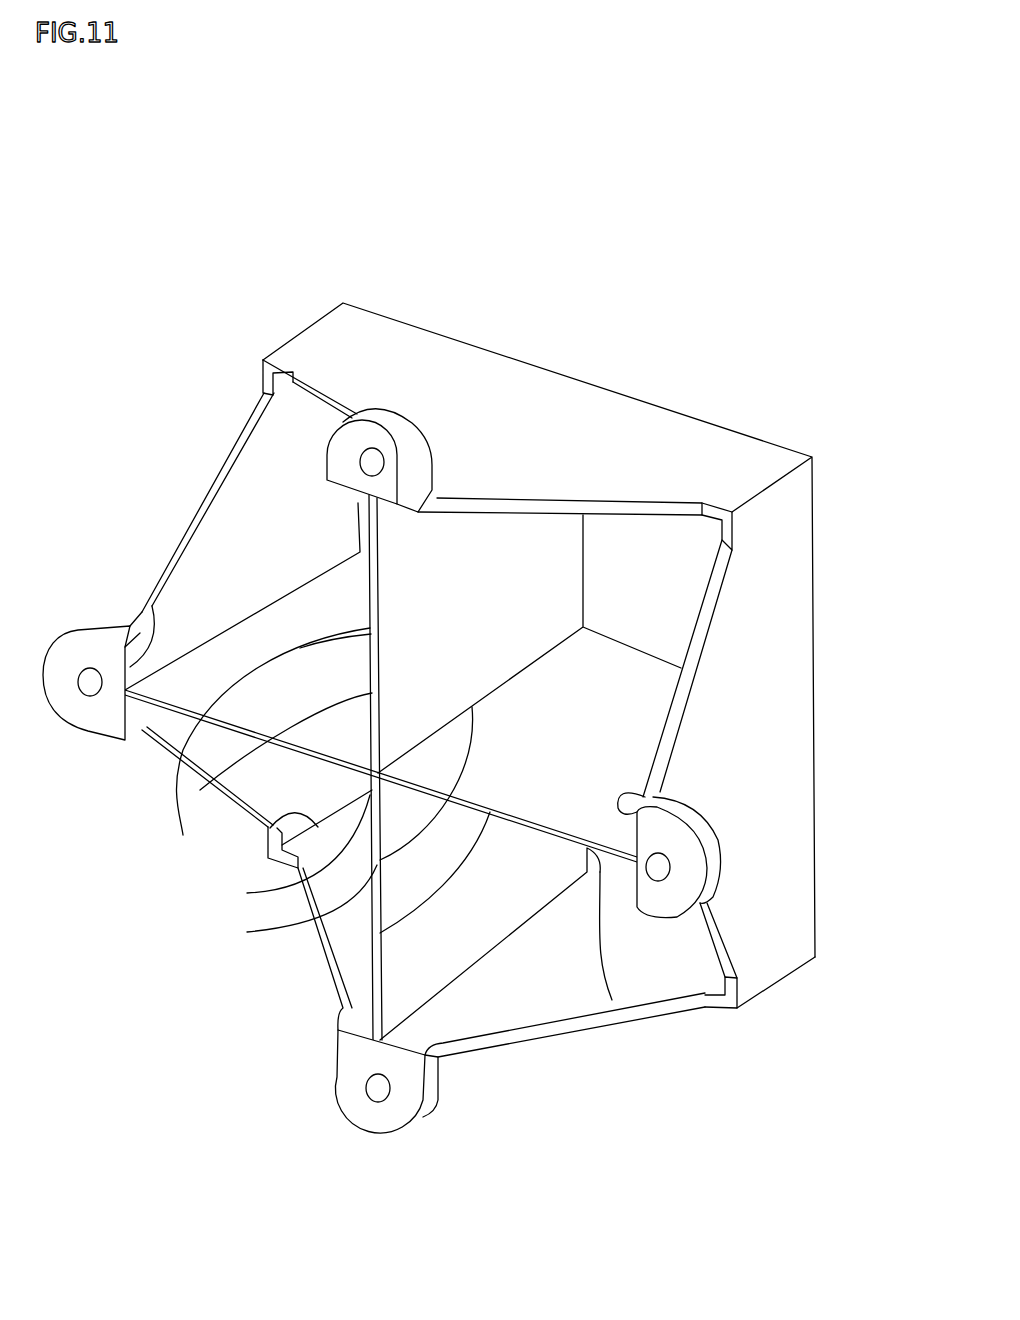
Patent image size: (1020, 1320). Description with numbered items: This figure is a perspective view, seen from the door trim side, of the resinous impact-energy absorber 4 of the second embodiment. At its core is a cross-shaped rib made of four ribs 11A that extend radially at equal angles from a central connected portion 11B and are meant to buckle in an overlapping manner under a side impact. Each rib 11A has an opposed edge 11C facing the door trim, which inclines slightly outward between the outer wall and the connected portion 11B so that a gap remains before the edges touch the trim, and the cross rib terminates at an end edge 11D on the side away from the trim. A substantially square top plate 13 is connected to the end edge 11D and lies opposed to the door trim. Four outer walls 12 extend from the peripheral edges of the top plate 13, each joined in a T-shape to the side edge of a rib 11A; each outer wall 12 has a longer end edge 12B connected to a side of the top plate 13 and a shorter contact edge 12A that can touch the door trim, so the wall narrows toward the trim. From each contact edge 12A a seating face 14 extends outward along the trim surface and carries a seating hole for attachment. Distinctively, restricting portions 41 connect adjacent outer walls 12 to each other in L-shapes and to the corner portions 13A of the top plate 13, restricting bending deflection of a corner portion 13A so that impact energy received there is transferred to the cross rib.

The resinous impact-energy absorber 4 is at (461, 172).
The rib 11A is at (535, 475).
The connected portion 11B is at (262, 932).
The opposed edge 11C is at (150, 700).
The end edge 11D is at (672, 555).
The outer wall 12 is at (263, 493).
The contact edge 12A is at (410, 458).
The end edge 12B is at (258, 408).
The top plate 13 is at (643, 640).
The corner portion 13A is at (345, 300).
The seating face 14 is at (392, 420).
The restricting portion 41 is at (265, 357).